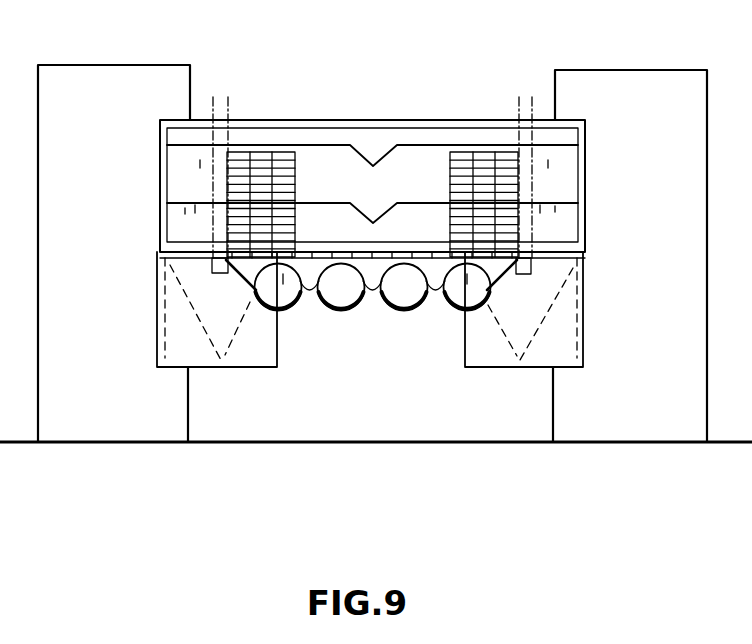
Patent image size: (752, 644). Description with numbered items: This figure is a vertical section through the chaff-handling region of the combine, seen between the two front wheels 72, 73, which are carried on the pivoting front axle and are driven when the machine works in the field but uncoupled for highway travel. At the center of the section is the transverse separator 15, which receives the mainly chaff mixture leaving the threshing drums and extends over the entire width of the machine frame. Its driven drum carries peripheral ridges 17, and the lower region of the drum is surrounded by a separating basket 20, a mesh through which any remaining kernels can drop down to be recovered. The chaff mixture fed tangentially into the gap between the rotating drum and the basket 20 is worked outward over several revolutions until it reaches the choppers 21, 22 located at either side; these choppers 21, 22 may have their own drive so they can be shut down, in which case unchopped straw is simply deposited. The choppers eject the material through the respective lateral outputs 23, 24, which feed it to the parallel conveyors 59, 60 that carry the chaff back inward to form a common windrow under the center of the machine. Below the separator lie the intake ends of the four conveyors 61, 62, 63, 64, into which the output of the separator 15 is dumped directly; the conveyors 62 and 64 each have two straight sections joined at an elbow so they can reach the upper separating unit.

The separator 15 is at (372, 120).
The peripheral ridges 17 is at (313, 145).
The separating basket 20 is at (482, 160).
The chopper 21 is at (556, 162).
The chopper 22 is at (190, 162).
The output 23 is at (536, 370).
The output 24 is at (193, 367).
The conveyor 59 is at (512, 360).
The conveyor 60 is at (228, 350).
The conveyor 61 is at (457, 292).
The conveyor 62 is at (403, 295).
The conveyor 63 is at (343, 292).
The conveyor 64 is at (283, 298).
The front wheel 72 is at (625, 412).
The front wheel 73 is at (100, 417).